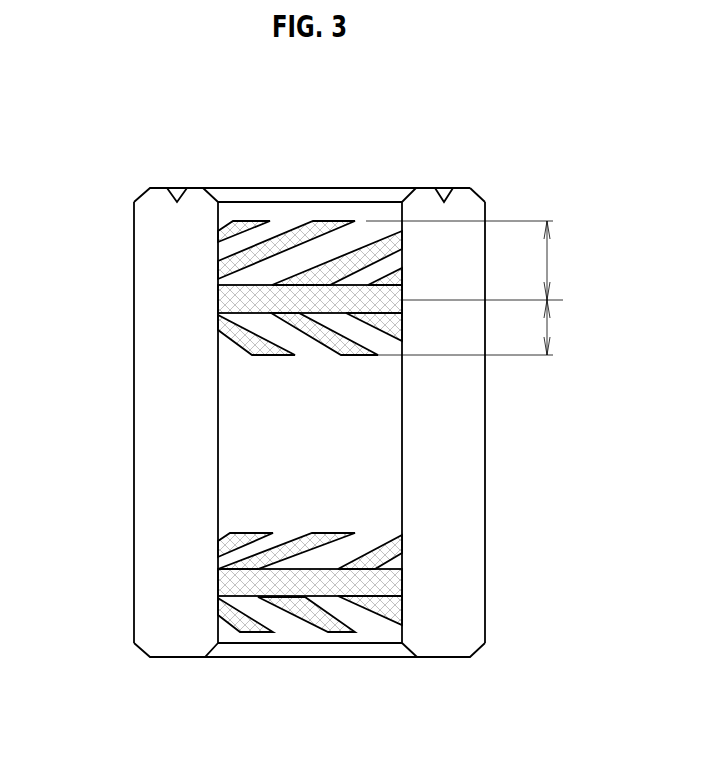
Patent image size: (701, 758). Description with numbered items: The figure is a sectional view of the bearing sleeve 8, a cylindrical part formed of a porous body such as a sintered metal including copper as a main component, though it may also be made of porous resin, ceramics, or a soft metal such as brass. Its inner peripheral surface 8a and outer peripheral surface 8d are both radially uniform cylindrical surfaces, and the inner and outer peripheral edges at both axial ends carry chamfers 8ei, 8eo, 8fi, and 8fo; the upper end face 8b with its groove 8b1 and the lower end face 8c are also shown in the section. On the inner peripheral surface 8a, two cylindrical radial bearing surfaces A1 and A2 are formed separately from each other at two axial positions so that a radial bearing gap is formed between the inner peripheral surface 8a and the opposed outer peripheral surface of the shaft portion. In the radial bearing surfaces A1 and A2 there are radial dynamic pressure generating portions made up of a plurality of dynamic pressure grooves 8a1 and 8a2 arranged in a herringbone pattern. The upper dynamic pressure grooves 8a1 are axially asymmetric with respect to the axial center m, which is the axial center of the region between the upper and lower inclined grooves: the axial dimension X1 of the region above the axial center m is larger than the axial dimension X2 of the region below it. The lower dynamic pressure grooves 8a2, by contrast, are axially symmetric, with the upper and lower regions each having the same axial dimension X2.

The bearing sleeve 8 is at (112, 217).
The inner peripheral surface 8a is at (402, 433).
The upper dynamic pressure grooves 8a1 is at (263, 231).
The lower dynamic pressure grooves 8a2 is at (268, 545).
The upper end surface 8b is at (195, 186).
The groove 8b1 is at (442, 187).
The lower end surface 8c is at (182, 658).
The outer peripheral surface 8d is at (135, 358).
The chamfer 8ei is at (408, 195).
The chamfer 8eo is at (480, 192).
The chamfer 8fi is at (407, 657).
The chamfer 8fo is at (480, 657).
The radial bearing surface A1 is at (222, 270).
The radial bearing surface A2 is at (221, 545).
The axial dimension of upper region X1 is at (474, 260).
The axial dimension of lower region X2 is at (480, 327).
The axial center m is at (498, 294).